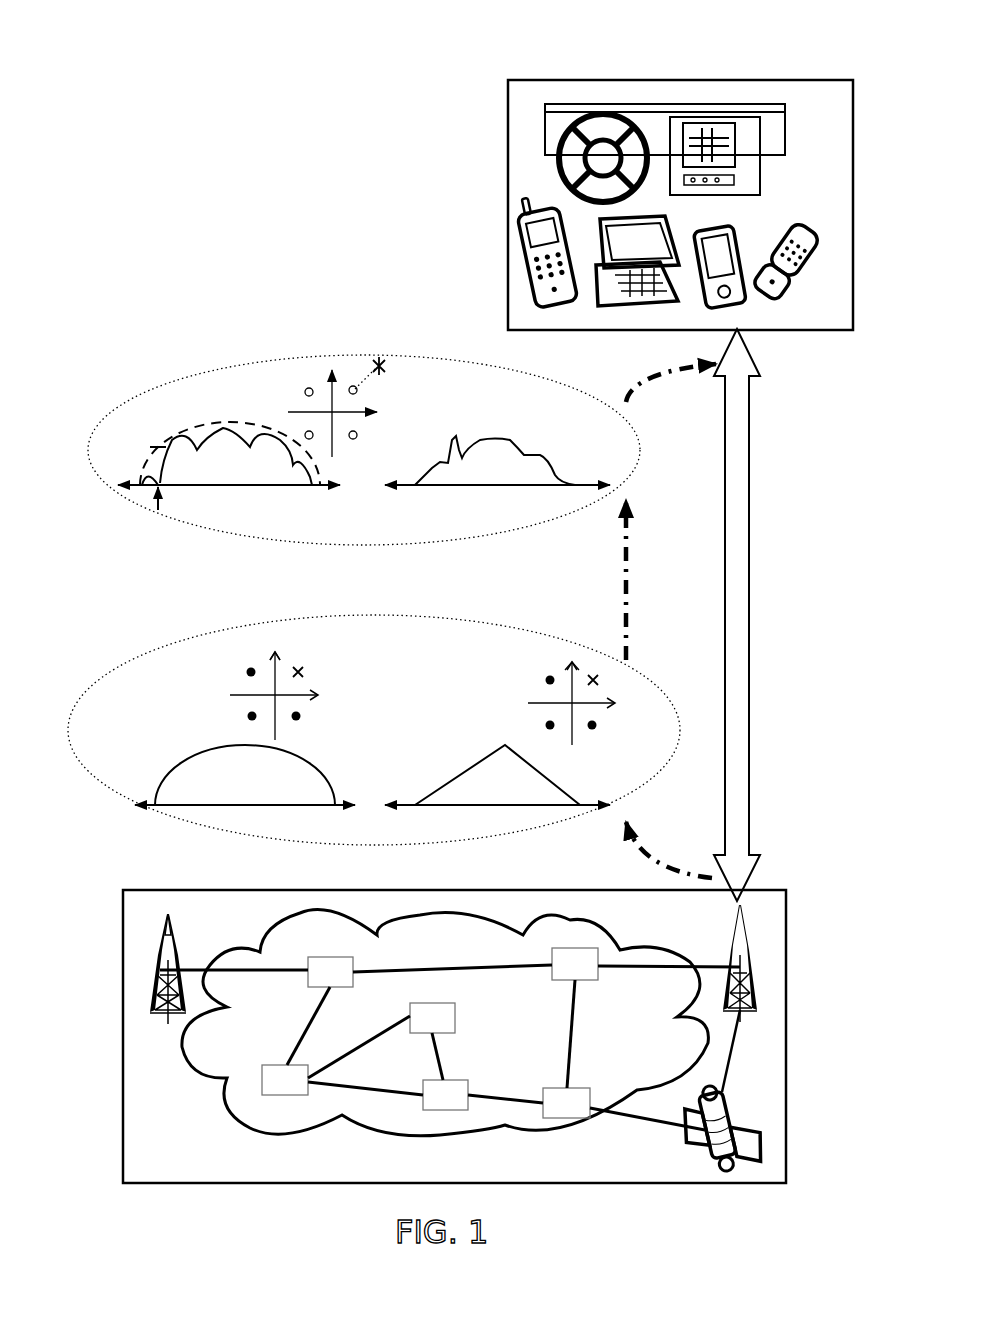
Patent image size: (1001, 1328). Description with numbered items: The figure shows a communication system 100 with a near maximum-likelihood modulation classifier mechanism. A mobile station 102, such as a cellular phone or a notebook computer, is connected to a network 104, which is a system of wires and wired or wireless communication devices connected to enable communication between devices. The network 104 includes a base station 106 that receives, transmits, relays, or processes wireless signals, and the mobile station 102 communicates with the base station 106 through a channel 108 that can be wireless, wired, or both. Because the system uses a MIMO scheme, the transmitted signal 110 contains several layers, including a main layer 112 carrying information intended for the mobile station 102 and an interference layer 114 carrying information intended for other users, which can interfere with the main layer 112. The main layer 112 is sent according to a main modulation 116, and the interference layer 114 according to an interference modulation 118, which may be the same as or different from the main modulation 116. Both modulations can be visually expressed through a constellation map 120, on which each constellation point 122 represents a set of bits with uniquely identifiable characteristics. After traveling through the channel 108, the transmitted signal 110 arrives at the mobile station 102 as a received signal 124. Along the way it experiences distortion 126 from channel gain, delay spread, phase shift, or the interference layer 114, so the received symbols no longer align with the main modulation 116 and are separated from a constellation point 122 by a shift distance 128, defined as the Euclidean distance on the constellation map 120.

The communication system 100 is at (200, 50).
The mobile station 102 is at (506, 128).
The network 104 is at (122, 937).
The base station 106 is at (722, 1092).
The channel 108 is at (750, 428).
The transmitted signal 110 is at (85, 797).
The main layer 112 is at (195, 745).
The interference layer 114 is at (498, 742).
The main modulation 116 is at (256, 635).
The interference modulation 118 is at (583, 660).
The constellation map 120 is at (572, 665).
The constellation point 122 is at (270, 652).
The received signal 124 is at (82, 462).
The distortion 126 is at (158, 440).
The shift distance 128 is at (374, 364).